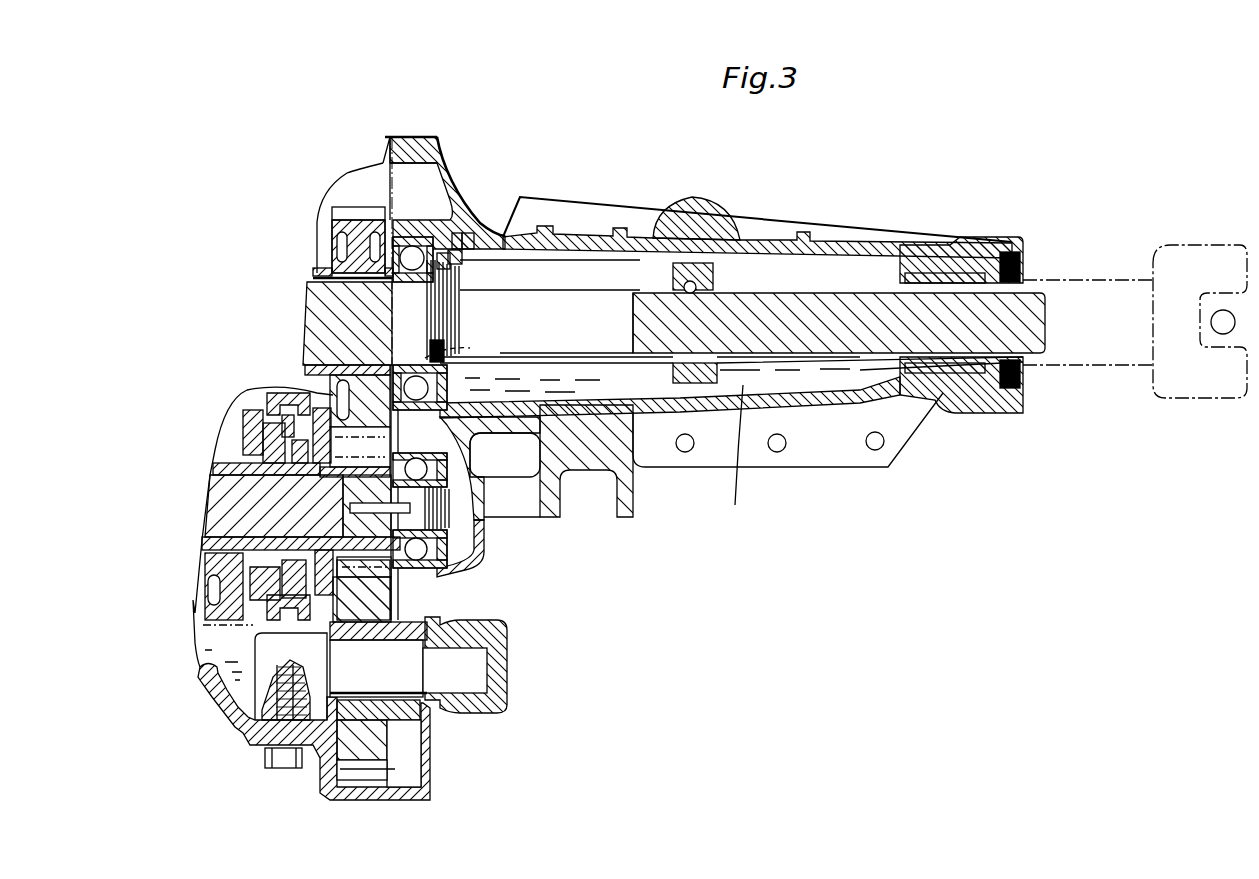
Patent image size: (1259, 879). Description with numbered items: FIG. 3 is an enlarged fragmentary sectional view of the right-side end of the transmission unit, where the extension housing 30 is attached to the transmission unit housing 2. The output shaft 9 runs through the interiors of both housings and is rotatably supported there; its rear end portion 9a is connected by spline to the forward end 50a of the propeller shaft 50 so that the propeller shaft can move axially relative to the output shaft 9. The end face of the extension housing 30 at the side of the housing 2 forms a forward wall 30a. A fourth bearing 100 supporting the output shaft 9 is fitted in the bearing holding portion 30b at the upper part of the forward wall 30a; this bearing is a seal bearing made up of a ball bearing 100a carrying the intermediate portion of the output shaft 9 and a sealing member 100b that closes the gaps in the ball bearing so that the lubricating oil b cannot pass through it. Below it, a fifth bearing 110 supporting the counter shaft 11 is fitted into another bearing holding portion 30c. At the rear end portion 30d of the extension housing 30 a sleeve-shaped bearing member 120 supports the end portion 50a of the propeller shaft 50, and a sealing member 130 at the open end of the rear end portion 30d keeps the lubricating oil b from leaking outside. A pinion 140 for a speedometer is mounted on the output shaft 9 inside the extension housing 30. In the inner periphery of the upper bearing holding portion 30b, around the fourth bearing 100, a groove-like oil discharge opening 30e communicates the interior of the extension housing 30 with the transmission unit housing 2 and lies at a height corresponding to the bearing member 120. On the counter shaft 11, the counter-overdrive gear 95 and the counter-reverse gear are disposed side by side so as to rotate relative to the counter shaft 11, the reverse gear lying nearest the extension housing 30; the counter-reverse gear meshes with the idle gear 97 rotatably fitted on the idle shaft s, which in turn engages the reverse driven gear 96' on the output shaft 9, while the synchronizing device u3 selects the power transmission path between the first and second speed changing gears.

The transmission unit housing 2 is at (209, 692).
The output shaft 9 is at (333, 300).
The rear end portion of output shaft 9a is at (878, 318).
The counter shaft 11 is at (222, 504).
The extension housing 30 is at (641, 206).
The forward wall 30a is at (412, 143).
The bearing holding portion 30b is at (407, 217).
The bearing holding portion 30c is at (437, 577).
The rear end portion of extension housing 30d is at (950, 257).
The oil discharge opening 30e is at (456, 356).
The propeller shaft 50 is at (1105, 350).
The forward end of propeller shaft 50a is at (862, 368).
The counter-overdrive gear 95 is at (228, 626).
The second speed changing gear for reverse 96' is at (336, 216).
The idle gear 97 is at (360, 772).
The fourth bearing 100 is at (664, 100).
The ball bearing 100a is at (480, 225).
The sealing member 100b is at (487, 265).
The fifth bearing 110 is at (447, 561).
The bearing member 120 is at (956, 375).
The sealing member 130 is at (1023, 258).
The pinion for speedometer 140 is at (673, 378).
The synchronizing device u3 is at (290, 393).
The lubricating oil b is at (243, 688).
The idle shaft s is at (380, 662).